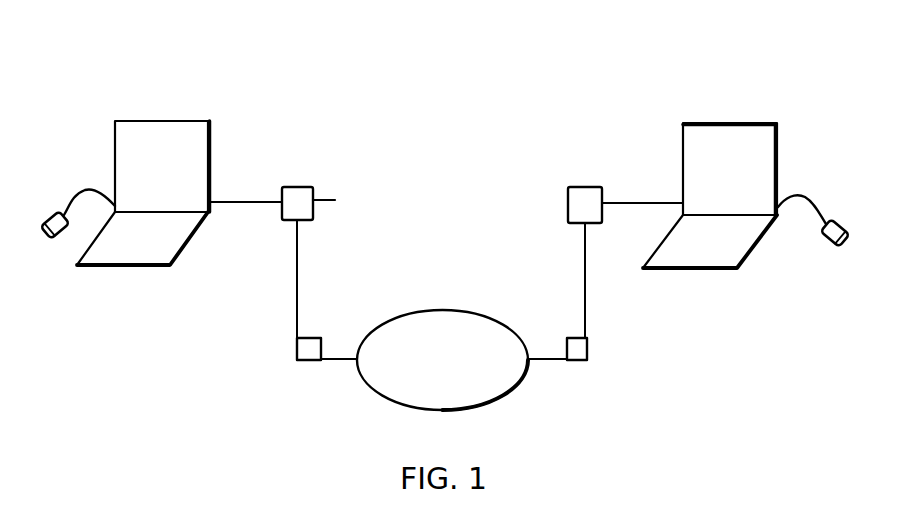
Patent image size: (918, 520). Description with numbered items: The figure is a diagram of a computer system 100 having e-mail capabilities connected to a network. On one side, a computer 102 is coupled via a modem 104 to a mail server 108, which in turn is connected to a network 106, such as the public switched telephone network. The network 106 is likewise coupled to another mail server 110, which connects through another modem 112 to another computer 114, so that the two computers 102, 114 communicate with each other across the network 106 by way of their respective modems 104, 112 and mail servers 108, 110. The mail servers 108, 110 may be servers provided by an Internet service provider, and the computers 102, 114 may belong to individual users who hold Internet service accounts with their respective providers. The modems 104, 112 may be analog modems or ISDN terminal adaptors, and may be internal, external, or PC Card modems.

The computer system 100 is at (531, 54).
The computer 102 is at (208, 143).
The modem 104 is at (333, 200).
The network 106 is at (463, 311).
The mail server 108 is at (308, 337).
The mail server 110 is at (587, 353).
The modem 112 is at (580, 187).
The computer 114 is at (732, 124).